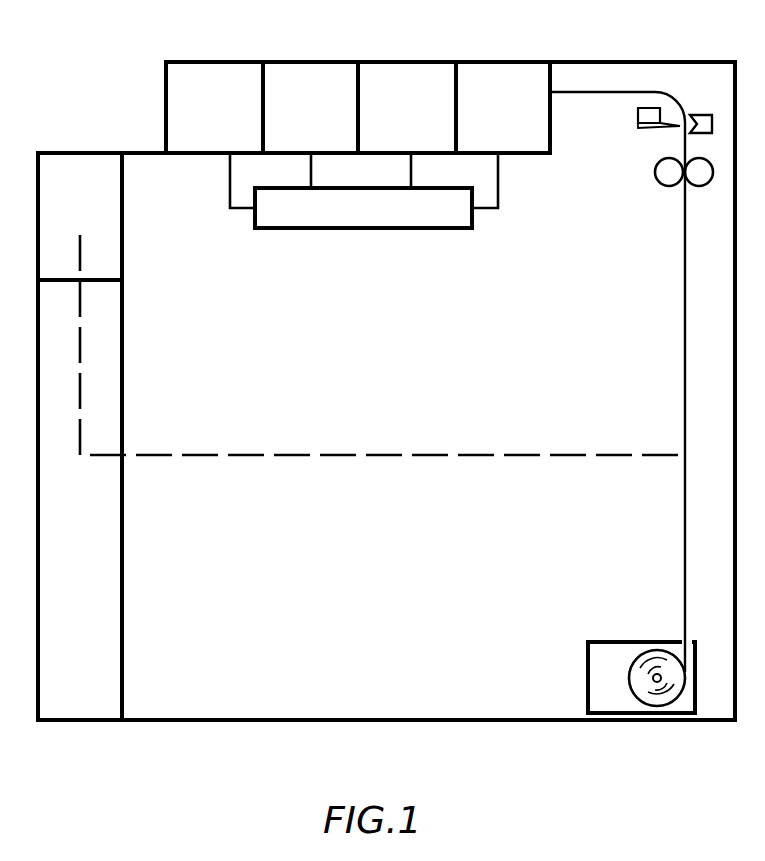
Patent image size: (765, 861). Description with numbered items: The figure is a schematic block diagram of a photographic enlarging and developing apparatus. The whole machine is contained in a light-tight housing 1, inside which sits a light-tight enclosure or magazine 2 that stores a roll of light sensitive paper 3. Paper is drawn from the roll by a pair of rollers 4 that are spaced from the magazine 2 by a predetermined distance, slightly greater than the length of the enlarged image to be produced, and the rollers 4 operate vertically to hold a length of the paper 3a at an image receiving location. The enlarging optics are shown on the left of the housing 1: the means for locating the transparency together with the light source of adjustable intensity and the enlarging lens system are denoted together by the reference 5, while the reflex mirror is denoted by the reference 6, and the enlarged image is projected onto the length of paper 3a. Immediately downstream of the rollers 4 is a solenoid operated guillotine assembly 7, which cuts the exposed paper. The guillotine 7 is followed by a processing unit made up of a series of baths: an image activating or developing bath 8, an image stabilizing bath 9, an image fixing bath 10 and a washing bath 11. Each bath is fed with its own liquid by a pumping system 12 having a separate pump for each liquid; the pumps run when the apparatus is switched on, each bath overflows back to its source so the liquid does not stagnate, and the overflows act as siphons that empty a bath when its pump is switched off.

The light-tight housing 1 is at (398, 710).
The light-tight enclosure or magazine 2 is at (618, 650).
The roll of light sensitive paper 3 is at (637, 698).
The length of paper 3a is at (684, 371).
The pair of rollers 4 is at (652, 188).
The locating means, light source and lens system 5 is at (91, 220).
The reflex mirror 6 is at (91, 538).
The solenoid operated guillotine assembly 7 is at (690, 104).
The image activating or developing bath 8 is at (510, 120).
The image stabilizing bath 9 is at (414, 120).
The image fixing bath 10 is at (322, 120).
The washing bath 11 is at (225, 120).
The pumping system 12 is at (380, 222).